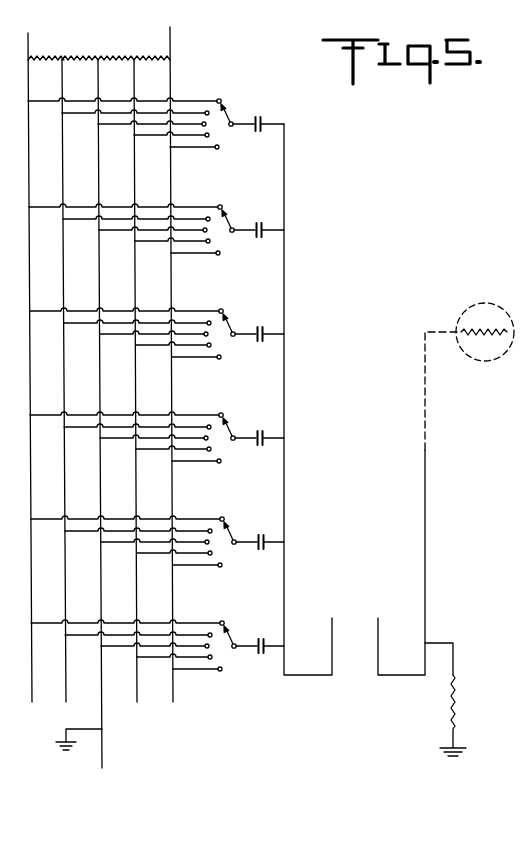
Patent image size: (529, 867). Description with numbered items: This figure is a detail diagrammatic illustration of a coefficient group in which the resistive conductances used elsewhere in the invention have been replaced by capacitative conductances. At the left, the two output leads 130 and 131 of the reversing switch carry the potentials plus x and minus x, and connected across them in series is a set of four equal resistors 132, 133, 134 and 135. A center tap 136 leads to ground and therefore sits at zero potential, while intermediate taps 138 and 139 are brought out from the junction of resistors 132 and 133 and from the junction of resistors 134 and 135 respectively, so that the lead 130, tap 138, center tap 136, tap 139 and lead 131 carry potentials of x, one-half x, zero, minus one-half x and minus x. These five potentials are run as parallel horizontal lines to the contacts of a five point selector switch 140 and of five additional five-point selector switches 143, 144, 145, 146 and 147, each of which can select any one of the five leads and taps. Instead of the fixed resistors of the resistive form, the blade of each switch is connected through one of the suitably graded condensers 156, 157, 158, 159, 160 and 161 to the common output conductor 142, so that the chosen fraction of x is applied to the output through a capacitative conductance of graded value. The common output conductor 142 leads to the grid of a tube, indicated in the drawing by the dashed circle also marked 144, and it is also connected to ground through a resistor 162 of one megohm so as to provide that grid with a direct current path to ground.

The output lead 130 is at (28, 73).
The output lead 131 is at (172, 87).
The resistor 132 is at (41, 56).
The resistor 133 is at (72, 56).
The resistor 134 is at (110, 56).
The resistor 135 is at (149, 55).
The center tap 136 is at (99, 92).
The intermediate tap 138 is at (63, 92).
The intermediate tap 139 is at (135, 91).
The five point selector switch 140 is at (241, 104).
The five-point selector switch 143 is at (218, 202).
The five-point selector switch 144 is at (366, 338).
The five-point selector switch 145 is at (232, 410).
The five-point selector switch 146 is at (232, 514).
The five-point selector switch 147 is at (233, 620).
The condenser 156 is at (274, 111).
The condenser 157 is at (259, 206).
The condenser 158 is at (259, 313).
The condenser 159 is at (259, 418).
The condenser 160 is at (260, 523).
The condenser 161 is at (260, 627).
The common output conductor 142 is at (284, 589).
The resistor 162 is at (457, 695).